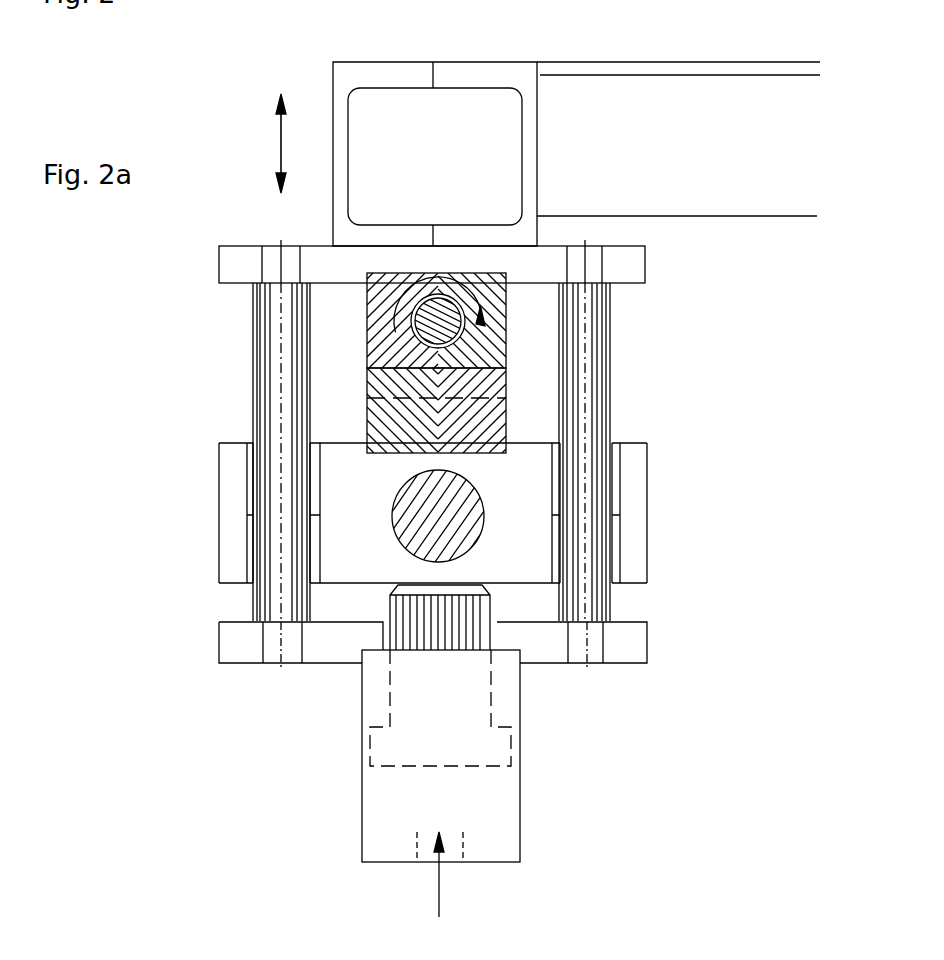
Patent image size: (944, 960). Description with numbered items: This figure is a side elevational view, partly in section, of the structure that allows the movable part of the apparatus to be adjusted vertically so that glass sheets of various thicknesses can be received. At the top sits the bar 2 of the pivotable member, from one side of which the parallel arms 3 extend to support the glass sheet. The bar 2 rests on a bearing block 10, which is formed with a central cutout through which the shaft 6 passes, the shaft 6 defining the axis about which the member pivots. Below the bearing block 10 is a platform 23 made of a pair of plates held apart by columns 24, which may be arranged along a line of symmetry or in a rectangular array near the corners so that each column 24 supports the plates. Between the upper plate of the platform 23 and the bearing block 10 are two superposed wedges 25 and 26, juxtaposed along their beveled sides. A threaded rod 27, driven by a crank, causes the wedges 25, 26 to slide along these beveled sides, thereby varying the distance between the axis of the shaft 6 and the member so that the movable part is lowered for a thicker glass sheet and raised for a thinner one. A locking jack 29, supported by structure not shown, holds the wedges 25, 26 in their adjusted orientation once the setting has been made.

The bar 2 is at (684, 128).
The arm 3 is at (512, 127).
The shaft 6 is at (455, 512).
The bearing block 10 is at (527, 532).
The platform 23 is at (632, 262).
The column 24 is at (281, 590).
The wedge 25 is at (497, 298).
The wedge 26 is at (482, 412).
The threaded rod 27 is at (423, 322).
The locking jack 29 is at (493, 742).